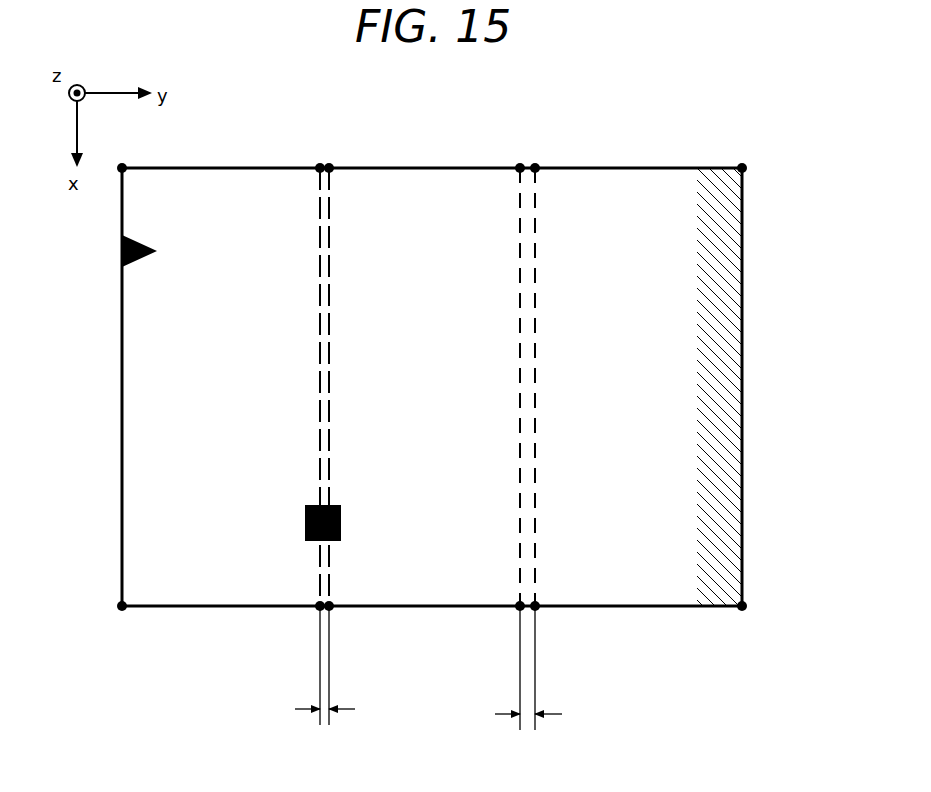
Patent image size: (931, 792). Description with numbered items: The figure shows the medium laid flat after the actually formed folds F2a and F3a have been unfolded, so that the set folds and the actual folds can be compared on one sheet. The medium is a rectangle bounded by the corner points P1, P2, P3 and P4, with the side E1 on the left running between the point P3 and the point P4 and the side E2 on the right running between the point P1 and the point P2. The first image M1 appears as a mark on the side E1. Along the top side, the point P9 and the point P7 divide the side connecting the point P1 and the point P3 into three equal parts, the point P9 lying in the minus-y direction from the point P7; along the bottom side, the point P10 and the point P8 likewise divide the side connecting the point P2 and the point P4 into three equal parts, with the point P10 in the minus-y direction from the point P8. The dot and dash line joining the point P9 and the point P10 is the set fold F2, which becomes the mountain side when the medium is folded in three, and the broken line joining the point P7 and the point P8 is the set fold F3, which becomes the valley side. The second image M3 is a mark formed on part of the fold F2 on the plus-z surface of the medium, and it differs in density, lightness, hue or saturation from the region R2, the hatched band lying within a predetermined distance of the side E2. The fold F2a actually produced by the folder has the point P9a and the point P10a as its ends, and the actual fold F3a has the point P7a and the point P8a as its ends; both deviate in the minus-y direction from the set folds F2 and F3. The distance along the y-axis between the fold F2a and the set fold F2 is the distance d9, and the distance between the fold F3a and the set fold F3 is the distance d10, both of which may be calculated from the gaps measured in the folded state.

The point P1 is at (745, 166).
The point P2 is at (745, 609).
The point P3 is at (124, 165).
The point P4 is at (120, 610).
The point P7 is at (537, 166).
The point P7a is at (518, 171).
The point P8 is at (539, 609).
The point P8a is at (518, 609).
The point P9 is at (331, 165).
The point P9a is at (318, 165).
The point P10 is at (331, 604).
The point P10a is at (318, 609).
The side E1 is at (122, 423).
The side E2 is at (742, 372).
The region R2 is at (730, 300).
The first image M1 is at (122, 252).
The second image M3 is at (305, 525).
The fold F2 is at (317, 387).
The fold F2a is at (277, 387).
The fold F3 is at (525, 387).
The fold F3a is at (518, 372).
The distance d9 is at (304, 665).
The distance d10 is at (497, 668).